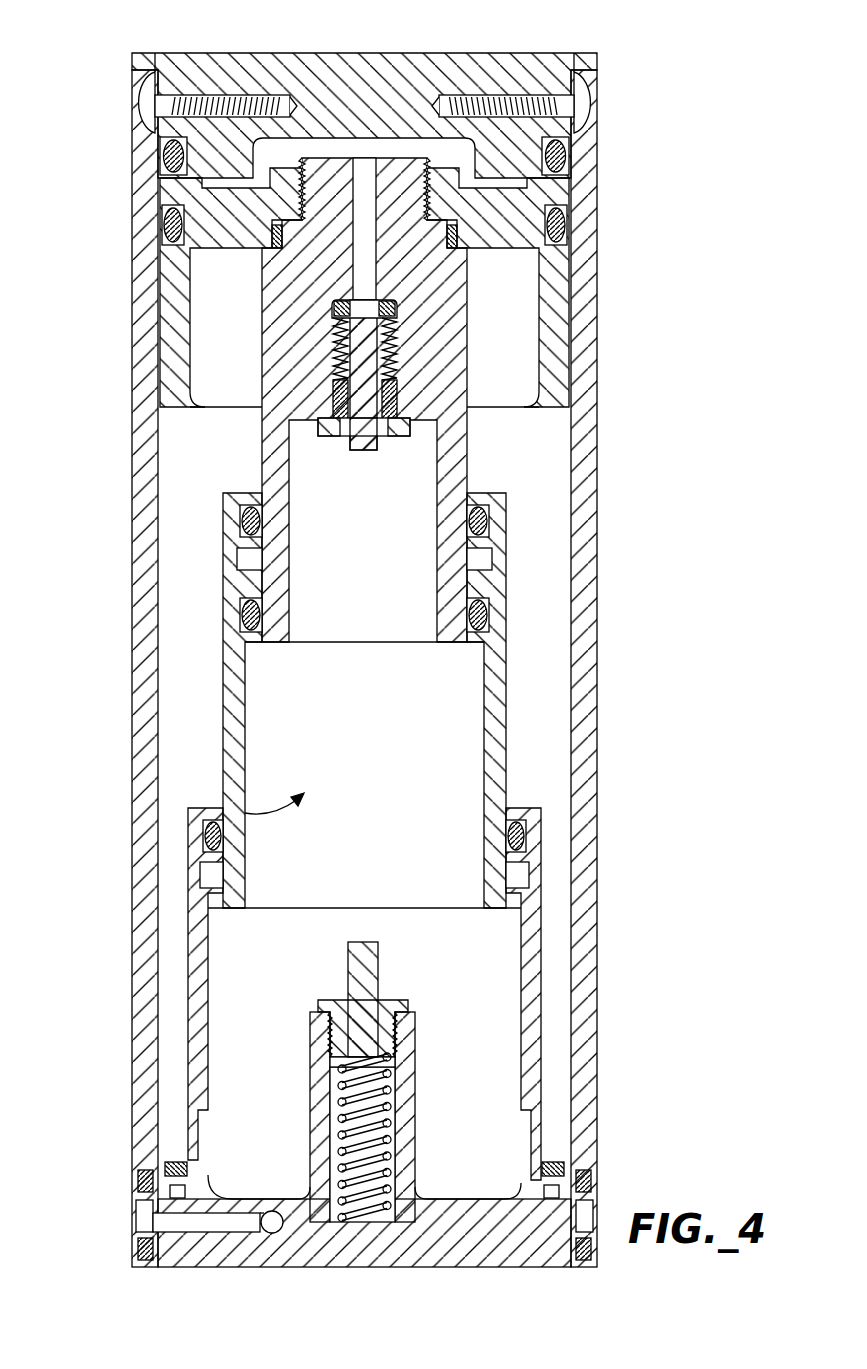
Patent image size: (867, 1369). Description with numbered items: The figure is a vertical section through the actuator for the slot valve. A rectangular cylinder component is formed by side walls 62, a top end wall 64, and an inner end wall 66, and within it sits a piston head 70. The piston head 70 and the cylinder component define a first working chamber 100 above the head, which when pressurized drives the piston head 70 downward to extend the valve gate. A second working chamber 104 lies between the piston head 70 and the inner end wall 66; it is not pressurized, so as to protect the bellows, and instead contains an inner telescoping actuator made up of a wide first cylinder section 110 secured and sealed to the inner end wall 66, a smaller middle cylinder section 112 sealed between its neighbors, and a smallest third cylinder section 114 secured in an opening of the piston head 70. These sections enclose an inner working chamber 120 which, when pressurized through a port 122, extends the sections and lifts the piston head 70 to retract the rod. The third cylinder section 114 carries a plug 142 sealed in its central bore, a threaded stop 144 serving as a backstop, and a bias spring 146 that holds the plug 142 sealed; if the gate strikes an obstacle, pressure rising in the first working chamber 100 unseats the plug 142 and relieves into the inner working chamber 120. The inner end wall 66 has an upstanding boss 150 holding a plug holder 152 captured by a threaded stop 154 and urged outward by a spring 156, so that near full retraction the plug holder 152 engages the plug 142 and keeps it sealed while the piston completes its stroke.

The side walls 62 is at (140, 497).
The top end wall 64 is at (415, 52).
The inner end wall 66 is at (455, 1247).
The piston head 70 is at (520, 215).
The first working chamber 100 is at (353, 140).
The second working chamber 104 is at (566, 612).
The first cylinder section 110 is at (190, 1100).
The second middle cylinder section 112 is at (235, 737).
The third cylinder section 114 is at (258, 467).
The inner working chamber 120 is at (228, 810).
The port 122 is at (217, 1217).
The plug 142 is at (363, 452).
The threaded stop 144 is at (438, 452).
The bias spring 146 is at (400, 355).
The upstanding boss 150 is at (414, 1110).
The plug holder 152 is at (380, 960).
The threaded stop 154 is at (402, 1005).
The spring 156 is at (330, 1093).